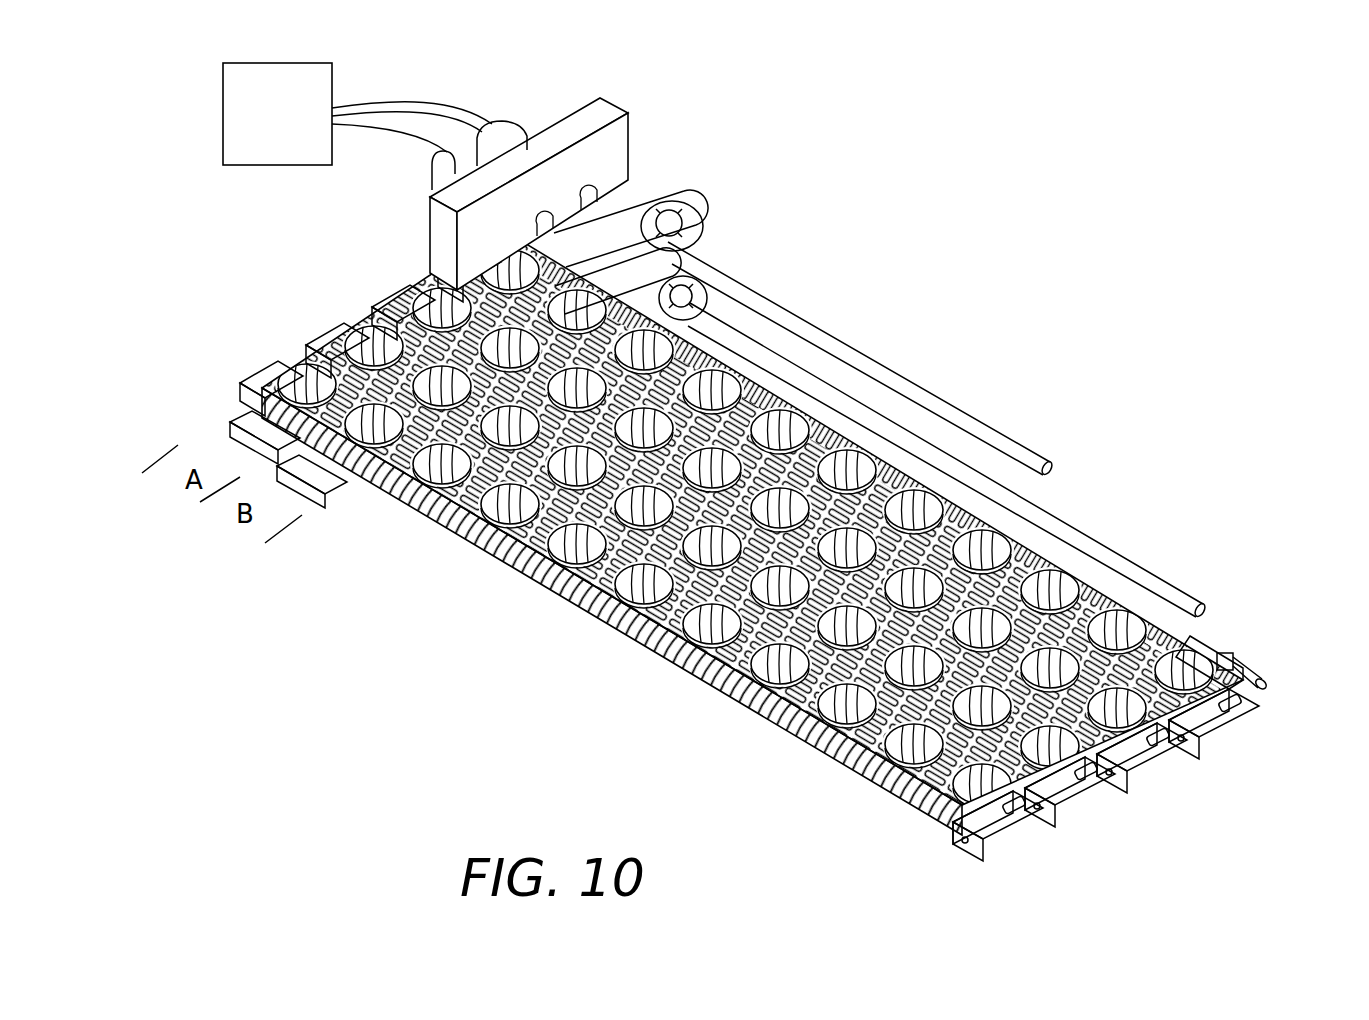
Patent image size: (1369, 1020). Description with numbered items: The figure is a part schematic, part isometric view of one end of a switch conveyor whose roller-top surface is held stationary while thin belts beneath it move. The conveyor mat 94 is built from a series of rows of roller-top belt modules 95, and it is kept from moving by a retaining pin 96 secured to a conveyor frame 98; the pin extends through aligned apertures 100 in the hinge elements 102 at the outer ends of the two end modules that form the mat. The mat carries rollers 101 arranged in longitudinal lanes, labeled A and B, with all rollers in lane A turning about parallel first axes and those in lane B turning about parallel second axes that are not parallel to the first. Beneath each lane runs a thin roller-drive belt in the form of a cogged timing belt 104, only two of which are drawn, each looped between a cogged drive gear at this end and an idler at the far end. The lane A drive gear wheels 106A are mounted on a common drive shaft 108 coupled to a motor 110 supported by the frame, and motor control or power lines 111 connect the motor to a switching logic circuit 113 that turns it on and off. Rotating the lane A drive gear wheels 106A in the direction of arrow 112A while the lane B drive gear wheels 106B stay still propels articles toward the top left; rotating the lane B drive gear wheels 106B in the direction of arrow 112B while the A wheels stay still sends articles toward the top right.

The conveyor mat 94 is at (1123, 733).
The roller-top belt modules 95 is at (990, 810).
The retaining pin 96 is at (1266, 683).
The conveyor frame 98 is at (567, 120).
The apertures 100 is at (1240, 661).
The rollers 101 is at (897, 793).
The hinge elements 102 is at (1193, 634).
The cogged timing belt 104 is at (323, 478).
The lane A drive gear wheels 106A is at (648, 232).
The lane B drive gear wheels 106B is at (690, 318).
The drive shaft 108 is at (1017, 447).
The motor 110 is at (440, 167).
The motor control or power lines 111 is at (390, 102).
The arrow 112A is at (673, 222).
The arrow 112B is at (693, 278).
The switching logic circuit 113 is at (230, 118).